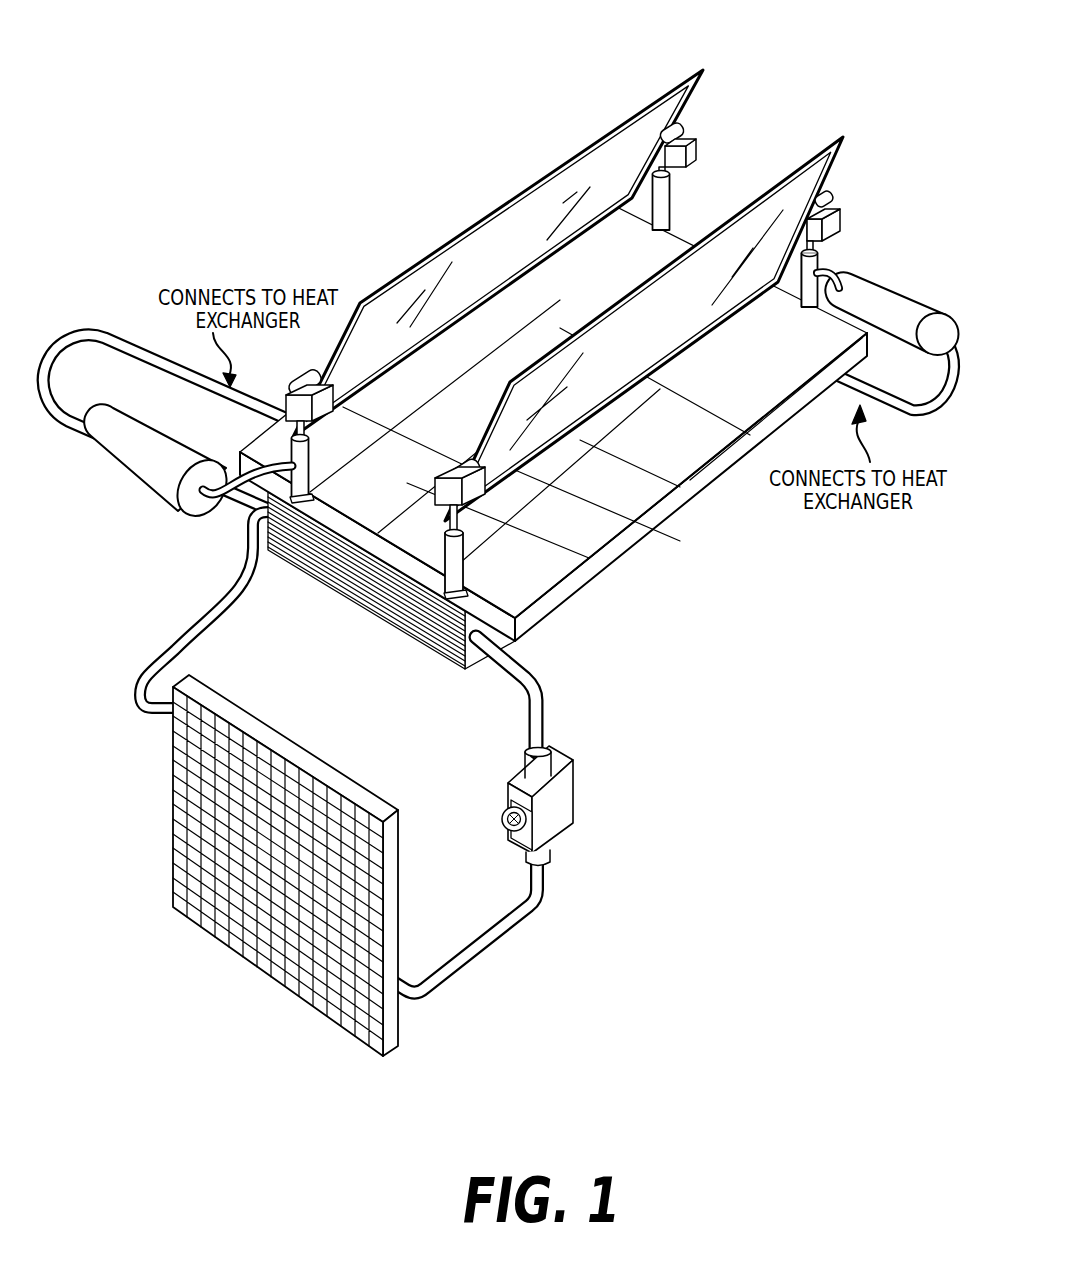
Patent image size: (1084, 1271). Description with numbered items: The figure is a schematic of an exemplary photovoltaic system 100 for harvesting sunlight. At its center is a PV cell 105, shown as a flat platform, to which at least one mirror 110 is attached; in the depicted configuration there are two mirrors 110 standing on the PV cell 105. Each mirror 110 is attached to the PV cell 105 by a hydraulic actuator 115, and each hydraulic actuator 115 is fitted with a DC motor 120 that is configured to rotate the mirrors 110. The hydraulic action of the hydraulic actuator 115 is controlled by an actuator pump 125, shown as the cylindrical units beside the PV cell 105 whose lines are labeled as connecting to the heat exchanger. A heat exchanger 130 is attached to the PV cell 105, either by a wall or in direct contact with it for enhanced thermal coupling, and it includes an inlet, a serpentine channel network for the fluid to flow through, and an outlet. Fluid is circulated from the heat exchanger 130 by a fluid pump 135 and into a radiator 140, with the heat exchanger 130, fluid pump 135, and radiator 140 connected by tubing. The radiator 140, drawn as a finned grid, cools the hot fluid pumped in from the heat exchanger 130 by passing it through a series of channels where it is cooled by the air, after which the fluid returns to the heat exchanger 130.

The photovoltaic system 100 is at (156, 66).
The PV cell 105 is at (675, 474).
The mirror 110 is at (521, 264).
The hydraulic actuator 115 is at (819, 266).
The DC motor 120 is at (843, 207).
The actuator pump 125 is at (163, 465).
The heat exchanger 130 is at (372, 618).
The fluid pump 135 is at (567, 808).
The radiator 140 is at (392, 1031).